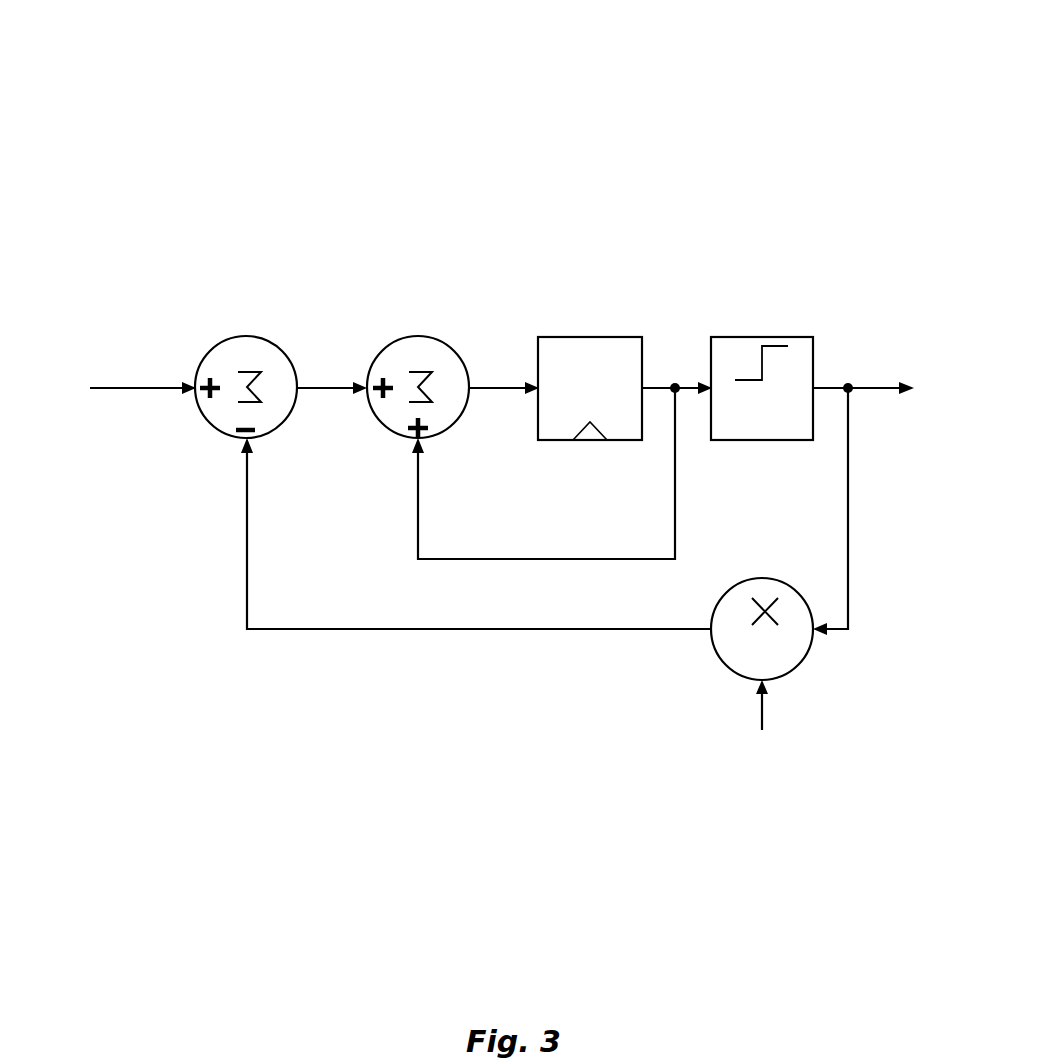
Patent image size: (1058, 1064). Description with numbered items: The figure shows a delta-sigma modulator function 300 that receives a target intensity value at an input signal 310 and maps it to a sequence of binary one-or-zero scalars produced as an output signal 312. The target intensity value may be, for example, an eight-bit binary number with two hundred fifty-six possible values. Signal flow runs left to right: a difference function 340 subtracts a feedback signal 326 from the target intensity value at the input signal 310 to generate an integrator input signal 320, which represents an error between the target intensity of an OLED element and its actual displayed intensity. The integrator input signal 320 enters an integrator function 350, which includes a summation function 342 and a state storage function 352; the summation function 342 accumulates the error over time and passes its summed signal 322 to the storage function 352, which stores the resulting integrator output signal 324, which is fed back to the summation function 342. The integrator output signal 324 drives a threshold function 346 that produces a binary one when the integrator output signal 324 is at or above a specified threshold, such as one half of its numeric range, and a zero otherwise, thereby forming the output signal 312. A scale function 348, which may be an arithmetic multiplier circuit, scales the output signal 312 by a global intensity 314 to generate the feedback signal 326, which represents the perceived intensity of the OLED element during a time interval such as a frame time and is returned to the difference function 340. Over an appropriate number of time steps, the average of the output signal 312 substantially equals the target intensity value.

The delta-sigma modulator function 300 is at (790, 80).
The input signal 310 is at (115, 388).
The output signal 312 is at (880, 388).
The global intensity 314 is at (762, 720).
The integrator input signal 320 is at (325, 392).
The second summer output signal 322 is at (497, 386).
The integrator output signal 324 is at (676, 508).
The feedback signal 326 is at (248, 520).
The difference function 340 is at (218, 431).
The summation function 342 is at (443, 433).
The threshold function 346 is at (762, 388).
The scale function 348 is at (779, 534).
The integrator function 350 is at (660, 302).
The state storage function 352 is at (652, 450).